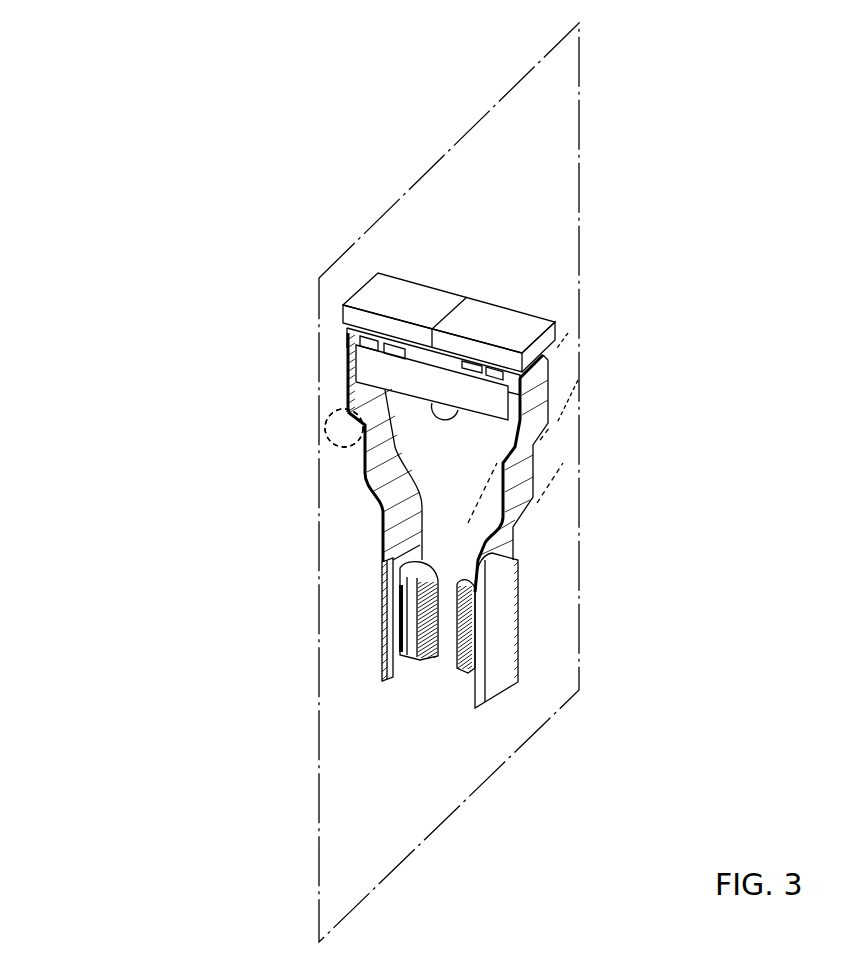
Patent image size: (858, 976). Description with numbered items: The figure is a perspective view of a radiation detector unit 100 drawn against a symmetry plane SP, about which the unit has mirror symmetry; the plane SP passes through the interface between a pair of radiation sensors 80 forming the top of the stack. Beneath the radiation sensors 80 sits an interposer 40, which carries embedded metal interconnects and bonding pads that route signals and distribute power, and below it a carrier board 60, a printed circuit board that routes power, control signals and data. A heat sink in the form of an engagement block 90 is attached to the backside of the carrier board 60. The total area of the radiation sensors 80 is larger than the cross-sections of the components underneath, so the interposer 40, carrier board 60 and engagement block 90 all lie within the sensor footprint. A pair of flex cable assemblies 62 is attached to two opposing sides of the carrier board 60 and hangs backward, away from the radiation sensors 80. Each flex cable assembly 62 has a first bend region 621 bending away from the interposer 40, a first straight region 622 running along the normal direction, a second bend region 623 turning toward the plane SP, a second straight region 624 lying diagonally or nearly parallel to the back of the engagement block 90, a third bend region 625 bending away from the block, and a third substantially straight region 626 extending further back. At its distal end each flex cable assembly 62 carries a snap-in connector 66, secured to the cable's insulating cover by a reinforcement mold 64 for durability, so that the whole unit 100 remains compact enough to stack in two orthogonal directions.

The radiation detector unit 100 is at (302, 258).
The symmetry plane SP is at (580, 197).
The radiation sensor 80 is at (468, 315).
The interposer 40 is at (347, 327).
The carrier board 60 is at (373, 381).
The engagement block 90 is at (446, 399).
The flex cable assembly 62 is at (363, 460).
The reinforcement mold 64 is at (383, 603).
The snap-in connector 66 is at (470, 673).
The first bend region 621 is at (568, 333).
The first straight region 622 is at (578, 380).
The second bend region 623 is at (333, 433).
The second straight region 624 is at (344, 428).
The third bend region 625 is at (344, 428).
The third substantially straight region 626 is at (560, 457).